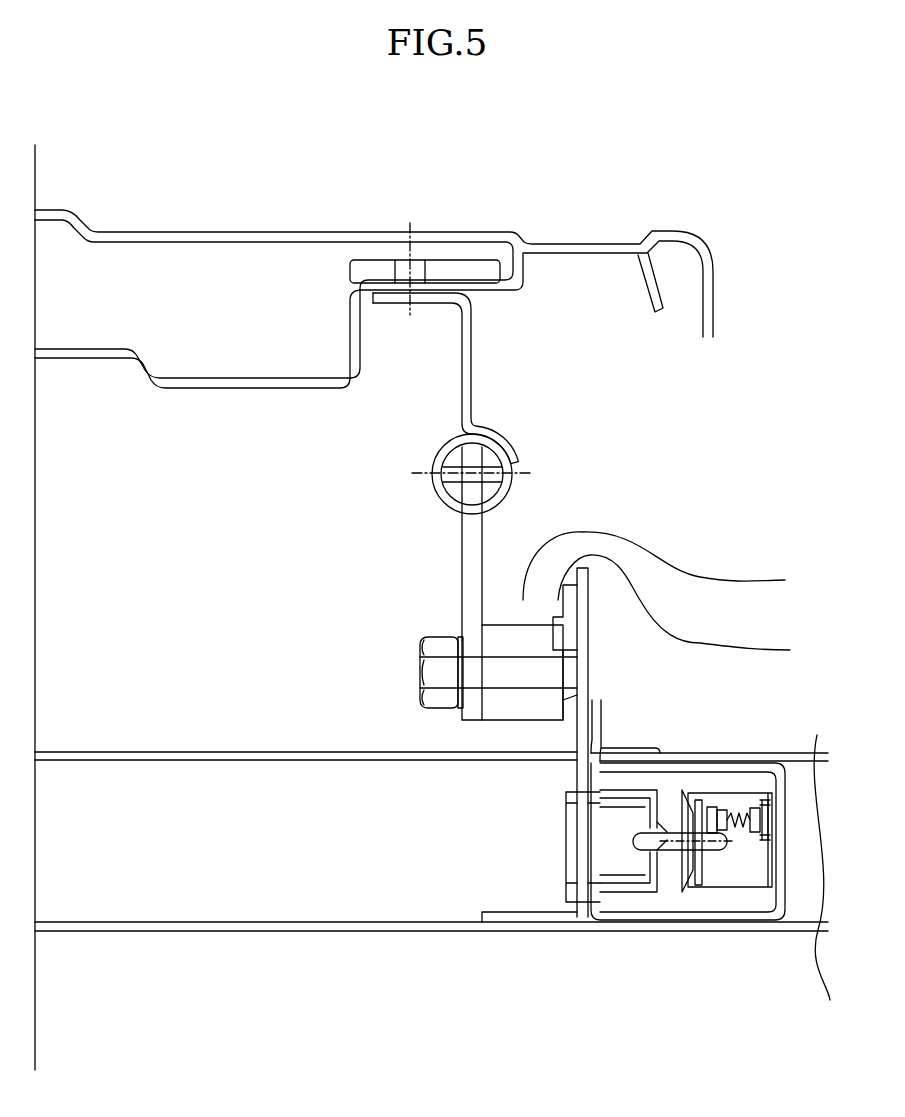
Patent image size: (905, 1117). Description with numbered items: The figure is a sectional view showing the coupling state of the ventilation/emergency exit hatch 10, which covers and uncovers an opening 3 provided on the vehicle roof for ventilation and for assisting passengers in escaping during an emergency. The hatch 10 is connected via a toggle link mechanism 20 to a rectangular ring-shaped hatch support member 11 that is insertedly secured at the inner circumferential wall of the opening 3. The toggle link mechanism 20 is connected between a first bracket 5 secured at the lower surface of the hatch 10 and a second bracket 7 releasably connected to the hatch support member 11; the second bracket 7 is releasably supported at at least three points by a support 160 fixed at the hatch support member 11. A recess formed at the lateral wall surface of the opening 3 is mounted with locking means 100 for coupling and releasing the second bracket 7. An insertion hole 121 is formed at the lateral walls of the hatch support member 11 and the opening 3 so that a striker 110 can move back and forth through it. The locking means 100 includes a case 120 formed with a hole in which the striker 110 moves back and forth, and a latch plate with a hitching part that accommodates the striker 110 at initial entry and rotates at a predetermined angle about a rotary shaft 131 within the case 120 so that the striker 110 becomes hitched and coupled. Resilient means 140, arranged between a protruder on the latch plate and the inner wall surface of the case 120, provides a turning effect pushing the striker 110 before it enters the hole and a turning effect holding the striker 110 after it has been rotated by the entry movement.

The opening 3 is at (182, 855).
The first bracket 5 is at (472, 387).
The second bracket 7 is at (563, 740).
The hatch 10 is at (205, 232).
The hatch support member 11 is at (691, 609).
The toggle link mechanism 20 is at (414, 676).
The locking means 100 is at (626, 903).
The striker 110 is at (676, 812).
The case 120 is at (735, 890).
The insertion hole 121 is at (575, 825).
The rotary shaft 131 is at (703, 863).
The resilient means 140 is at (742, 841).
The support 160 is at (677, 566).